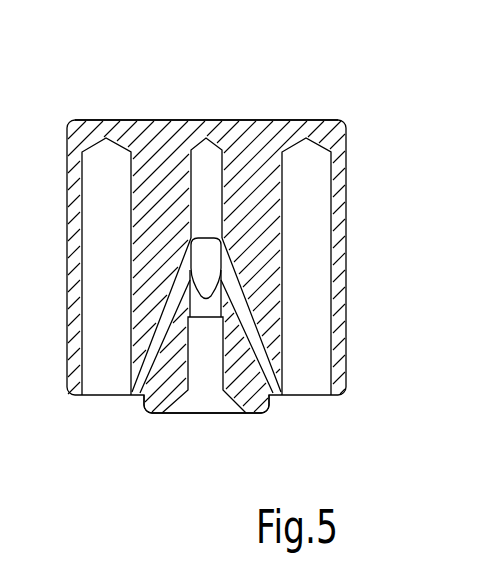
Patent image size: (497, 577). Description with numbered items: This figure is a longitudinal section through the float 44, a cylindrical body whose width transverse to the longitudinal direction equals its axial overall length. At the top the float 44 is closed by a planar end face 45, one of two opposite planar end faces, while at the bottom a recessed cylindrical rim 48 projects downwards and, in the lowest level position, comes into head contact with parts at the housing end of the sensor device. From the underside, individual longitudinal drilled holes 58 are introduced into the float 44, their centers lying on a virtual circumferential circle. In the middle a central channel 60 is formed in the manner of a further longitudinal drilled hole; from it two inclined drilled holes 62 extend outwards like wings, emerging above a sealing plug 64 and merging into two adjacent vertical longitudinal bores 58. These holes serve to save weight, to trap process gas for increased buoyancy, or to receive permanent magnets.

The float 44 is at (163, 153).
The end face 45 is at (270, 118).
The recessed cylindrical rim 48 is at (150, 413).
The longitudinal drilled holes 58 is at (108, 188).
The central channel 60 is at (202, 167).
The inclined drilled holes 62 is at (257, 327).
The sealing plug 64 is at (208, 377).